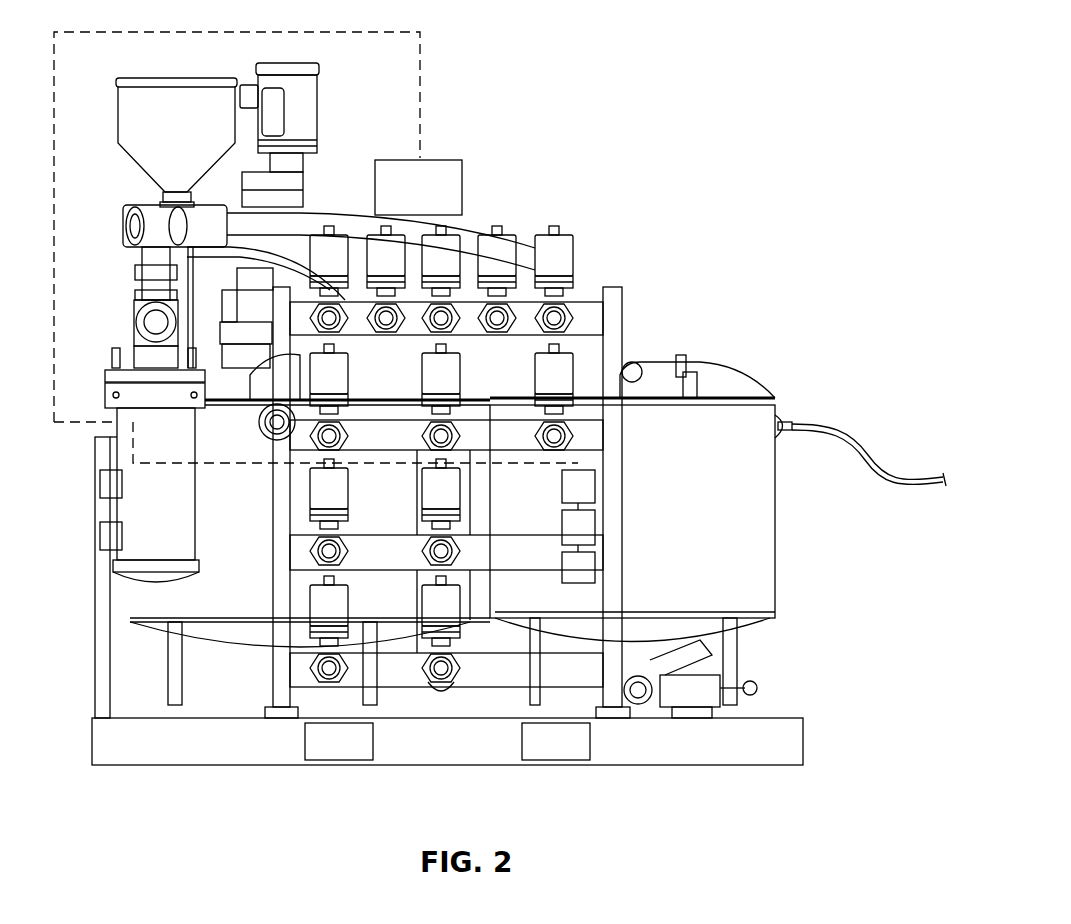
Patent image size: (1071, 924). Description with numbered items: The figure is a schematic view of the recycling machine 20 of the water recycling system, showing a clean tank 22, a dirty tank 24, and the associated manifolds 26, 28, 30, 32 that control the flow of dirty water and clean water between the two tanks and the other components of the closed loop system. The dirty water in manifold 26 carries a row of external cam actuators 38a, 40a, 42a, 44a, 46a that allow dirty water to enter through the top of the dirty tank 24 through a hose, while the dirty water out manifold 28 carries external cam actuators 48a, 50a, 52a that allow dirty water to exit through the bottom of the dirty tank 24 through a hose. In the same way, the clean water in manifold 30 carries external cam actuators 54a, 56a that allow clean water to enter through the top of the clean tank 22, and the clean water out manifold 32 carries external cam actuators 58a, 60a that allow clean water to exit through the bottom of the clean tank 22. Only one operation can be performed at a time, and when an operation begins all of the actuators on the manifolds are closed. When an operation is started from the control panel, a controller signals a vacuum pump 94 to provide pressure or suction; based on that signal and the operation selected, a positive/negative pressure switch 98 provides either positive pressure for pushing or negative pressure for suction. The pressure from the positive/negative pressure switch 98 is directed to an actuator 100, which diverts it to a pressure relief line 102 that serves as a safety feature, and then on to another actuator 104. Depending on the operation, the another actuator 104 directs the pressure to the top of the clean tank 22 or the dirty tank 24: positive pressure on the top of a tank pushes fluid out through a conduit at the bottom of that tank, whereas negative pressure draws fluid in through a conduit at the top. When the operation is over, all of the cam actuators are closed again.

The recycling machine 20 is at (703, 27).
The clean tank 22 is at (755, 495).
The dirty tank 24 is at (150, 600).
The dirty water in manifold 26 is at (583, 312).
The dirty water out manifold 28 is at (595, 440).
The clean water in manifold 30 is at (296, 548).
The clean water out manifold 32 is at (493, 677).
The external cam actuator 38a is at (315, 250).
The external cam actuator 40a is at (387, 250).
The external cam actuator 42a is at (443, 250).
The external cam actuator 44a is at (492, 252).
The external cam actuator 46a is at (558, 257).
The external cam actuator 48a is at (318, 378).
The external cam actuator 50a is at (438, 380).
The external cam actuator 52a is at (560, 380).
The external cam actuator 54a is at (317, 493).
The external cam actuator 56a is at (450, 492).
The external cam actuator 58a is at (320, 607).
The external cam actuator 60a is at (430, 607).
The vacuum pump 94 is at (597, 563).
The positive/negative pressure switch 98 is at (597, 523).
The actuator 100 is at (597, 486).
The pressure relief line 102 is at (132, 425).
The another actuator 104 is at (442, 206).